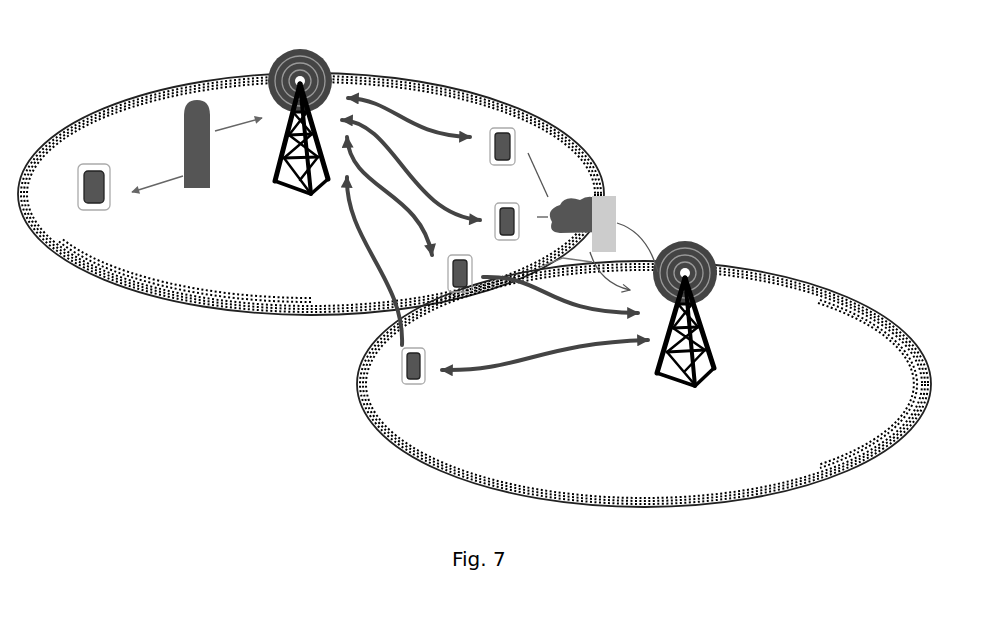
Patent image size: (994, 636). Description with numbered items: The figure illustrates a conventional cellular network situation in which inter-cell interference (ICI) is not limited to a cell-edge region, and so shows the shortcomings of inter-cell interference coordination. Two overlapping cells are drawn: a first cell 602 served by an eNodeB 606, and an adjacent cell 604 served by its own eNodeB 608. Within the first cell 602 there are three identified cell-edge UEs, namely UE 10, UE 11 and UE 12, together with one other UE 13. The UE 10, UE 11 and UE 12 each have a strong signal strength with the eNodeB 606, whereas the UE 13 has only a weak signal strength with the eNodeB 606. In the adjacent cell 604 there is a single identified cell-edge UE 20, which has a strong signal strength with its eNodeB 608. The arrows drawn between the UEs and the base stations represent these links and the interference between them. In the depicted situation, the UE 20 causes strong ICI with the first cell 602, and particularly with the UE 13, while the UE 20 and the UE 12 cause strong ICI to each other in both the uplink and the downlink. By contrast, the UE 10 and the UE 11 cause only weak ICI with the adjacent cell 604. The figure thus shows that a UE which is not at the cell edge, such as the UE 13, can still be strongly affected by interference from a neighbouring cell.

The first cell 602 is at (150, 92).
The adjacent cell 604 is at (788, 280).
The eNodeB 606 is at (277, 170).
The eNodeB 608 is at (710, 355).
The UE10 10 is at (501, 161).
The UE11 11 is at (507, 233).
The UE12 12 is at (459, 283).
The UE13 13 is at (94, 200).
The UE20 20 is at (411, 382).